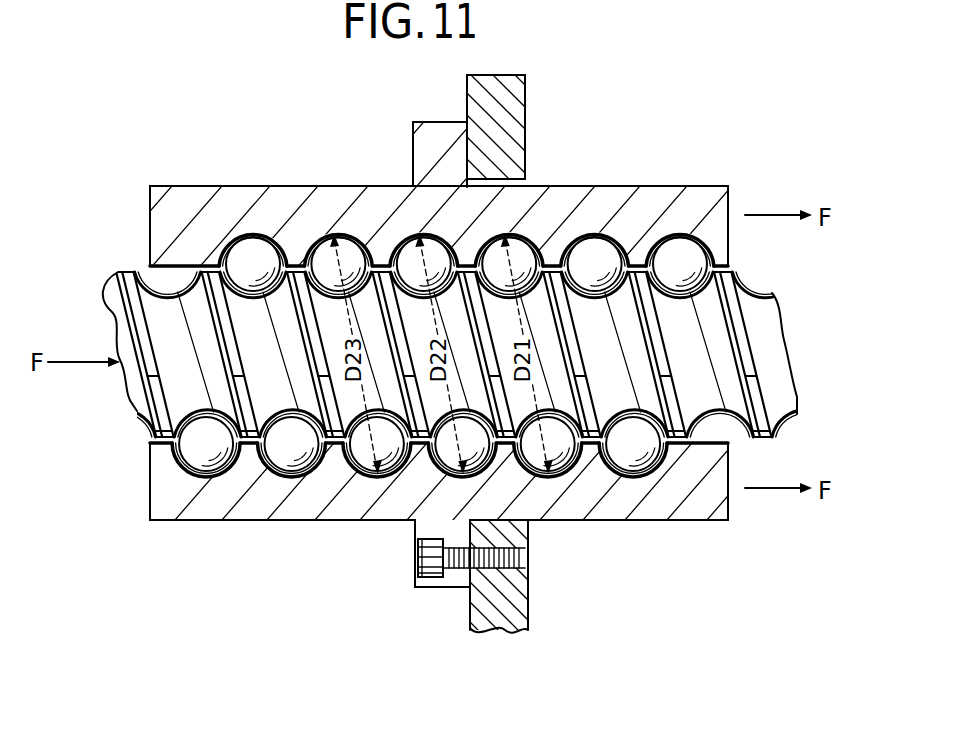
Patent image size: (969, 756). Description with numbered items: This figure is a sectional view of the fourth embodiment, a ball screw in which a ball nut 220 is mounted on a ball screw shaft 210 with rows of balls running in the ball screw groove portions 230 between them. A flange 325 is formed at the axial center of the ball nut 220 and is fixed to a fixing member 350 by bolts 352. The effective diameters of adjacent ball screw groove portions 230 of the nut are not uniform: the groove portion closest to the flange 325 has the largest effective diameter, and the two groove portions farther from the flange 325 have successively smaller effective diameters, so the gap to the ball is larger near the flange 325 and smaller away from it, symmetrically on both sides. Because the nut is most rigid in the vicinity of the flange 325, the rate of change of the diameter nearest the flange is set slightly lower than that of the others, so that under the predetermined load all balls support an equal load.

The screw shaft 210 is at (792, 328).
The nut 220 is at (644, 182).
The nut ball groove 230 is at (540, 238).
The flange 325 is at (413, 145).
The fixing member 350 is at (528, 606).
The bolts 352 is at (416, 568).